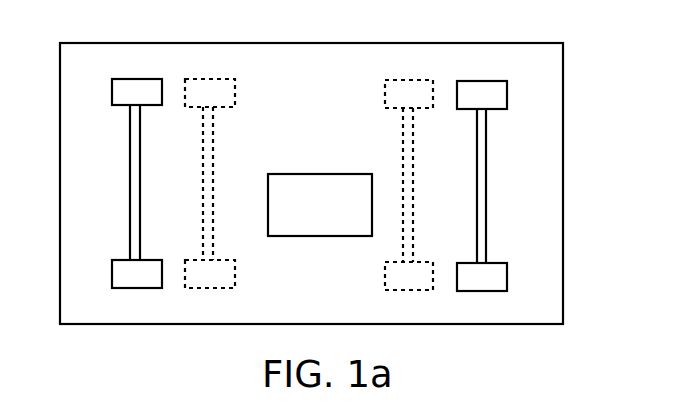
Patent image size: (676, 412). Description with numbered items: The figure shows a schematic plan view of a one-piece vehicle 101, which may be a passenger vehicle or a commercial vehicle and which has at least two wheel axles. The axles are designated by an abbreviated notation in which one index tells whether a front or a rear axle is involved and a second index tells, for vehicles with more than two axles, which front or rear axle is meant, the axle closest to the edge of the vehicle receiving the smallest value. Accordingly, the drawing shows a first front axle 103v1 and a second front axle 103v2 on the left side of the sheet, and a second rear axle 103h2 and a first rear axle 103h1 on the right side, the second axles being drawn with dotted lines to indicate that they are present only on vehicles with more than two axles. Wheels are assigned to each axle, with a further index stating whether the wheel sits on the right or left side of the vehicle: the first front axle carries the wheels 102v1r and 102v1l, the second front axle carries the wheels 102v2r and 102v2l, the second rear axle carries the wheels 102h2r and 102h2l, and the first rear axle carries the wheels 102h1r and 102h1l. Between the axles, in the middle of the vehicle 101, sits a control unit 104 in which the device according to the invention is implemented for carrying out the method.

The one-piece vehicle 101 is at (562, 248).
The wheel 102v1r is at (155, 83).
The wheel 102v1l is at (153, 289).
The wheel 102v2r is at (203, 84).
The wheel 102v2l is at (205, 289).
The wheel 102h1r is at (466, 87).
The wheel 102h1l is at (470, 290).
The wheel 102h2r is at (426, 82).
The wheel 102h2l is at (425, 291).
The front wheel axle 103v1 is at (133, 183).
The front wheel axle 103v2 is at (213, 157).
The rear wheel axle 103h1 is at (483, 185).
The rear wheel axle 103h2 is at (403, 160).
The control unit 104 is at (345, 238).